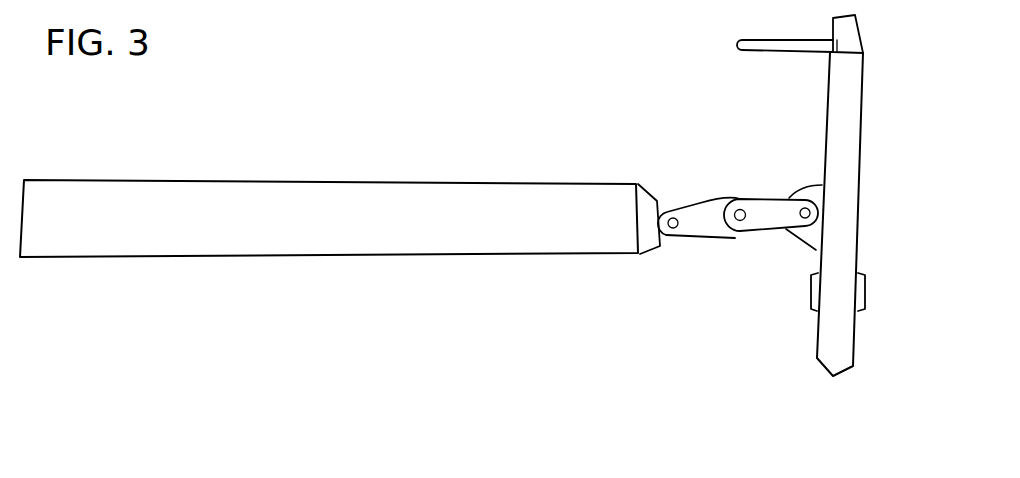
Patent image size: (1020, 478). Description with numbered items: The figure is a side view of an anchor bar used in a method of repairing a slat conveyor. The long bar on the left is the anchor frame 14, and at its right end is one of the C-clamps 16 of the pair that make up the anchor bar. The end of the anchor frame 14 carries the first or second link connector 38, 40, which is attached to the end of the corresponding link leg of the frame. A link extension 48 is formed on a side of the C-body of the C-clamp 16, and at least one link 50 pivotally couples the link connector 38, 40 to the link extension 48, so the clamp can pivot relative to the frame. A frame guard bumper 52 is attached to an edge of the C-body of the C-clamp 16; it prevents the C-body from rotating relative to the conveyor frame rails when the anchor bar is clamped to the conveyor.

The anchor frame 14 is at (373, 165).
The C-clamp 16 is at (797, 140).
The first link connector 38 is at (658, 168).
The second link connector 40 is at (653, 188).
The link extension 48 is at (800, 240).
The link 50 is at (707, 222).
The frame guard bumper 52 is at (808, 300).